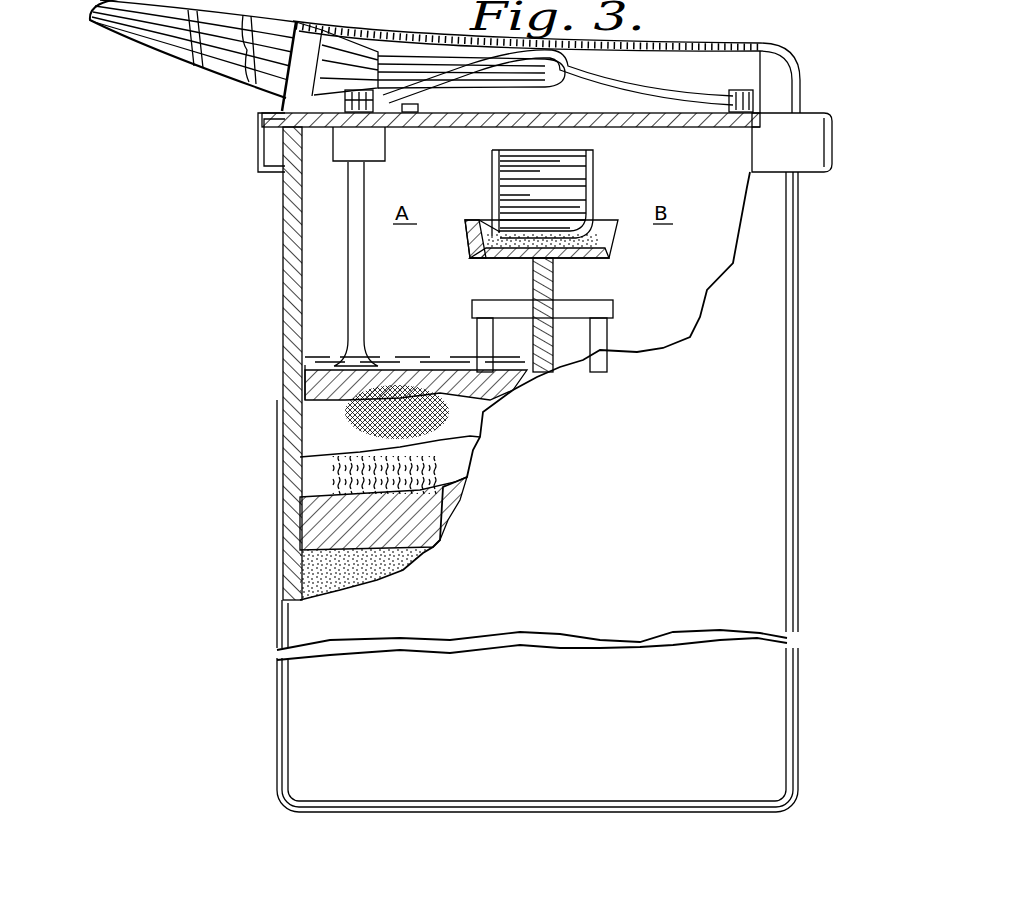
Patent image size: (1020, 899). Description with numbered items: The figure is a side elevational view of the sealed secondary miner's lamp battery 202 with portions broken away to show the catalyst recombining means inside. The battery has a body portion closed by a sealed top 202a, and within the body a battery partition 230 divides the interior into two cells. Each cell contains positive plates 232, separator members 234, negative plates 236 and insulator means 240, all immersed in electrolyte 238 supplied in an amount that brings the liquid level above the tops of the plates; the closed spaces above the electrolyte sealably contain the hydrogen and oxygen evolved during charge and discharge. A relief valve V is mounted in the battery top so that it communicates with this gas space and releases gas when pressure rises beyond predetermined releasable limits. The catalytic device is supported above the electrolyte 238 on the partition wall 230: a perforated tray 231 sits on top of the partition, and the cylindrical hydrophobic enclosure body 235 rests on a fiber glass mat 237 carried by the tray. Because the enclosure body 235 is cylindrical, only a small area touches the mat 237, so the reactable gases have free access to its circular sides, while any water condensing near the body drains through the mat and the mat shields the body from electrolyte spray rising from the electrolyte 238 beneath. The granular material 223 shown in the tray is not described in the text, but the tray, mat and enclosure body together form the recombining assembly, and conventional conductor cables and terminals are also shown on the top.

The miner's lamp battery 202 is at (767, 290).
The sealed top 202a is at (692, 124).
The granular material 223 is at (500, 262).
The battery partition 230 is at (542, 265).
The perforated tray 231 is at (615, 246).
The positive plates 232 is at (317, 428).
The separator members 234 is at (317, 484).
The hydrophobic enclosure body 235 is at (576, 194).
The negative plates 236 is at (323, 525).
The fiber glass mat 237 is at (487, 225).
The electrolyte 238 is at (298, 352).
The insulator means 240 is at (300, 580).
The relief valve V is at (410, 118).